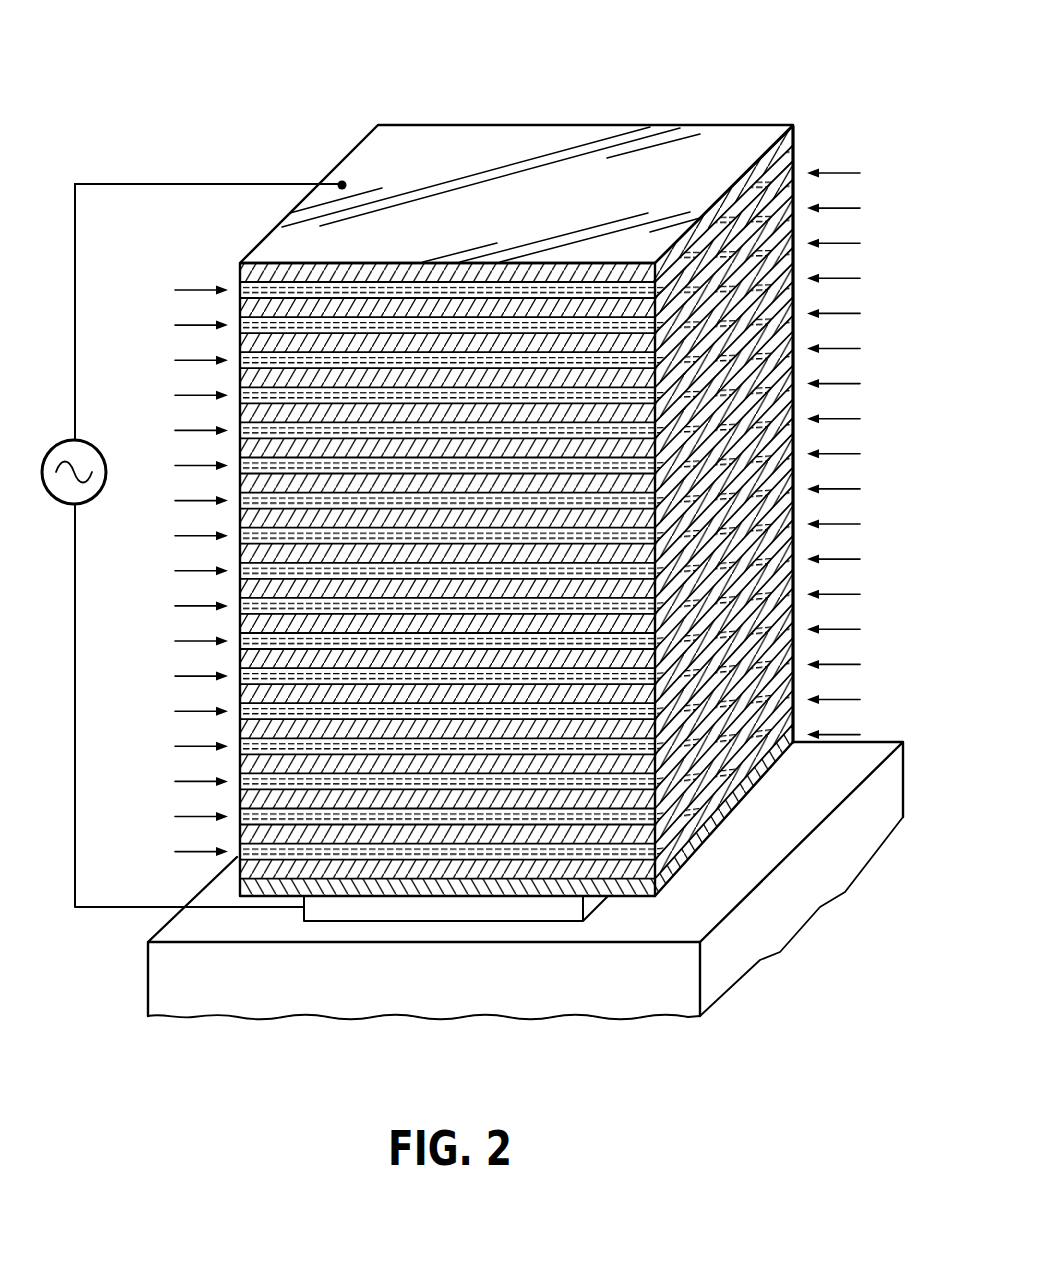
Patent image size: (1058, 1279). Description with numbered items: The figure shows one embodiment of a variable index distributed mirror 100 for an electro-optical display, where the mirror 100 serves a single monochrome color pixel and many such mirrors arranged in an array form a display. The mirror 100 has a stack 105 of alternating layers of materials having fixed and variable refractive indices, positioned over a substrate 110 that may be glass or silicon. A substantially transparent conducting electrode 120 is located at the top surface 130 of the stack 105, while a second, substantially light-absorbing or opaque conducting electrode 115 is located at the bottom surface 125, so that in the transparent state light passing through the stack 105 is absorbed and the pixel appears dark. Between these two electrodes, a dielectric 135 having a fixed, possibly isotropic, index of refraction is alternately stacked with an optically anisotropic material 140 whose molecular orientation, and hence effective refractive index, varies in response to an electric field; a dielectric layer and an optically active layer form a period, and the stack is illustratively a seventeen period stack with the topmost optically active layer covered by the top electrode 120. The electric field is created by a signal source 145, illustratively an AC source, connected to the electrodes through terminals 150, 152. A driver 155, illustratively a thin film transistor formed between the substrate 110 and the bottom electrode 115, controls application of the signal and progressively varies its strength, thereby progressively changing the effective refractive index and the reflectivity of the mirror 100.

The variable index distributed mirror 100 is at (305, 107).
The stack 105 is at (211, 258).
The substrate 110 is at (345, 980).
The light-absorbing conducting electrode 115 is at (740, 810).
The transparent conducting electrode 120 is at (797, 137).
The bottom surface 125 is at (643, 912).
The top surface 130 is at (492, 142).
The dielectric 135 is at (856, 155).
The optically anisotropic material 140 is at (168, 265).
The signal source 145 is at (88, 444).
The terminal 150 is at (135, 907).
The terminal 152 is at (125, 182).
The driver 155 is at (453, 908).